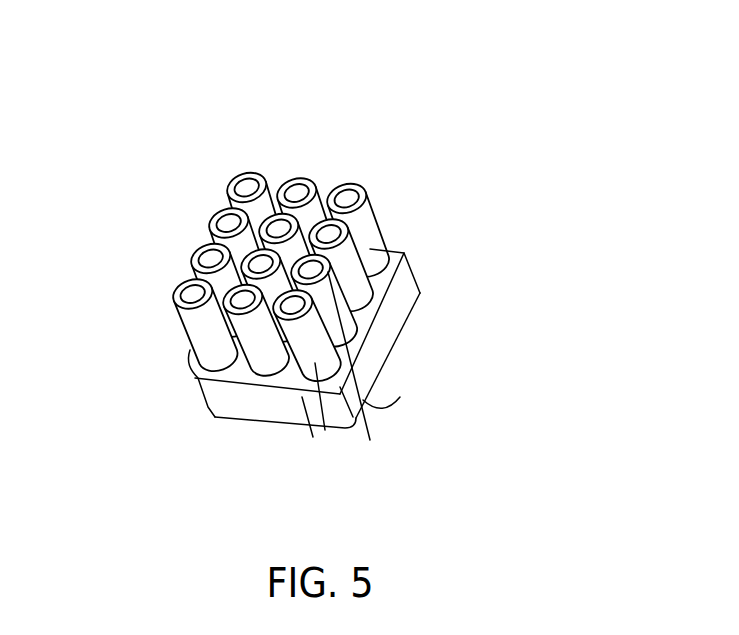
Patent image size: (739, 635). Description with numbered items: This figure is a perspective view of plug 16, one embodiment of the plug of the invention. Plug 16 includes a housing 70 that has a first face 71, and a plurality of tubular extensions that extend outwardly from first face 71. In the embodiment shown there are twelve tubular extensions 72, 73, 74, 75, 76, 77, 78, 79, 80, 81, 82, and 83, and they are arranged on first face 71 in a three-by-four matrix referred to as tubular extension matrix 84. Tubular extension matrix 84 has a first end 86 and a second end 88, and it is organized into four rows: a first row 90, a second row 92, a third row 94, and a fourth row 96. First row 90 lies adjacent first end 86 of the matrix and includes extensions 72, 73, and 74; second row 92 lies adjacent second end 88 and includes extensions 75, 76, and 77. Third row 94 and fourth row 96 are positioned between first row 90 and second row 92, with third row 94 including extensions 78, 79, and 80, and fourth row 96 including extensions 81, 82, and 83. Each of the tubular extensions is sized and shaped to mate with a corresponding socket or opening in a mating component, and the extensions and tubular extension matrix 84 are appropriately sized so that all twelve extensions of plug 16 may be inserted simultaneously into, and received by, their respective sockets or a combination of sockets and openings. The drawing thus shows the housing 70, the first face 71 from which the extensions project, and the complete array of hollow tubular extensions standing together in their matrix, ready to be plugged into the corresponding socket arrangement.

The plug 16 is at (273, 258).
The housing 70 is at (303, 379).
The first face 71 is at (383, 278).
The tubular extension 72 is at (239, 137).
The tubular extension 73 is at (298, 174).
The tubular extension 74 is at (375, 172).
The tubular extension 75 is at (192, 313).
The tubular extension 76 is at (250, 330).
The tubular extension 77 is at (316, 396).
The tubular extension 78 is at (222, 240).
The tubular extension 79 is at (159, 215).
The tubular extension 80 is at (366, 276).
The tubular extension 81 is at (159, 236).
The tubular extension 82 is at (393, 393).
The tubular extension 83 is at (342, 412).
The tubular extension matrix 84 is at (270, 396).
The first end 86 is at (332, 163).
The second end 88 is at (228, 388).
The first row 90 is at (230, 165).
The second row 92 is at (139, 323).
The third row 94 is at (159, 197).
The fourth row 96 is at (168, 261).